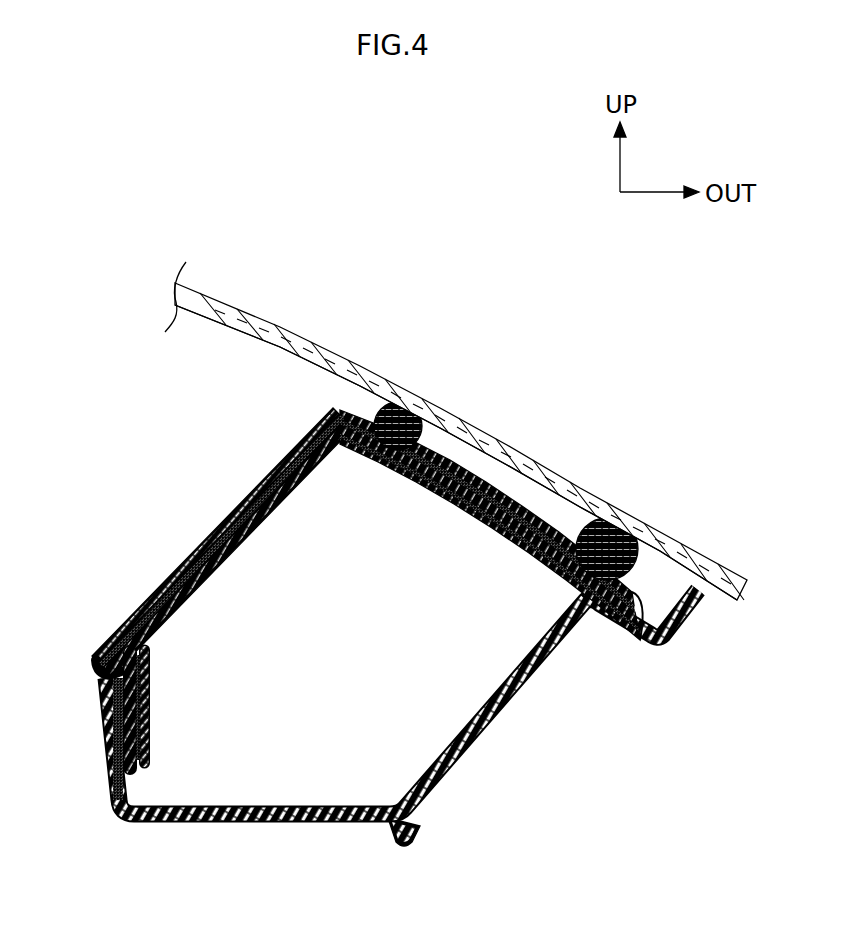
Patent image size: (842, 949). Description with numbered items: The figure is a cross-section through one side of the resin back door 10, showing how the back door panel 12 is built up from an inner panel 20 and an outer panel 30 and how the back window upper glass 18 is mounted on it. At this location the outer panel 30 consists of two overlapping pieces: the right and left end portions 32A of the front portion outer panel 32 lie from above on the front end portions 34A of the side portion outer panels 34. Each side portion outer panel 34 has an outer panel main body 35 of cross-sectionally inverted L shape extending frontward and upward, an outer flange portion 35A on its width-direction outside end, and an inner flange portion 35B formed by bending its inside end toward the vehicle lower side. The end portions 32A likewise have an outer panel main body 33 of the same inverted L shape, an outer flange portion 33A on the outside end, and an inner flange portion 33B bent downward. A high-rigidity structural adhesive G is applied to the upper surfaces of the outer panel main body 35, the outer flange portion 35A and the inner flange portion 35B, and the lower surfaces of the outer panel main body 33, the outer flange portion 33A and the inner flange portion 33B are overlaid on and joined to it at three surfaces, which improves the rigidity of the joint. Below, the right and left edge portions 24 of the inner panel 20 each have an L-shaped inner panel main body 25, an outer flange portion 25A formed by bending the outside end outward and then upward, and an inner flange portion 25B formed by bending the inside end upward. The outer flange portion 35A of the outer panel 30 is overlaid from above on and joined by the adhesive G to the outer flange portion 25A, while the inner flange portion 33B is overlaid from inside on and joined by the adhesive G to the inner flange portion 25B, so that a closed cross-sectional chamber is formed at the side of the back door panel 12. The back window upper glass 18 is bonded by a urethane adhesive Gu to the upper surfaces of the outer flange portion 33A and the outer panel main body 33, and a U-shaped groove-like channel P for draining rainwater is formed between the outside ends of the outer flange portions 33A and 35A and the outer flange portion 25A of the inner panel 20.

The resin back door 10 is at (456, 416).
The back door panel 12 is at (504, 765).
The back window upper glass 18 is at (502, 433).
The inner panel 20 is at (405, 763).
The right and left edge portions 24 is at (405, 763).
The inner panel main body 25 is at (328, 807).
The outer flange portion 25A is at (693, 625).
The inner flange portion 25B is at (103, 755).
The outer panel 30 is at (403, 631).
The front portion outer panel 32 is at (205, 530).
The right and left end portions 32A is at (205, 530).
The outer panel main body 33 is at (287, 457).
The outer flange portion 33A is at (645, 600).
The inner flange portion 33B is at (140, 773).
The side portion outer panels 34 is at (481, 525).
The front end portions 34A is at (378, 481).
The outer panel main body 35 is at (240, 540).
The outer flange portion 35A is at (640, 636).
The inner flange portion 35B is at (148, 708).
The structural adhesive G is at (212, 528).
The urethane adhesive Gu is at (400, 412).
The channel P is at (679, 607).